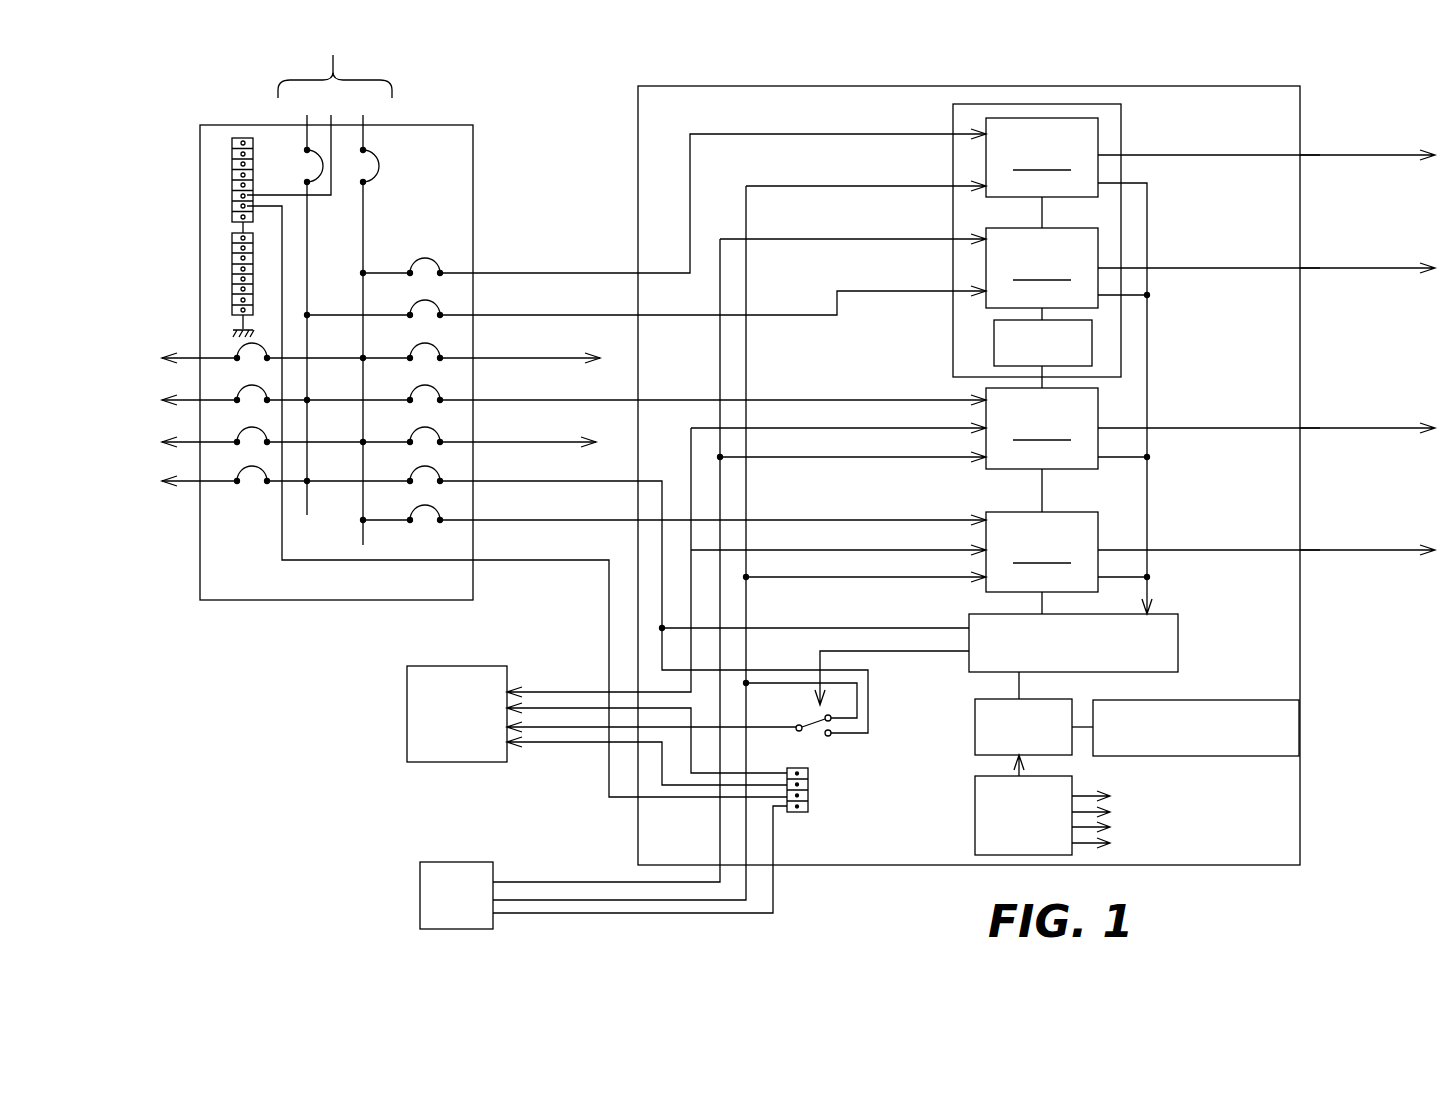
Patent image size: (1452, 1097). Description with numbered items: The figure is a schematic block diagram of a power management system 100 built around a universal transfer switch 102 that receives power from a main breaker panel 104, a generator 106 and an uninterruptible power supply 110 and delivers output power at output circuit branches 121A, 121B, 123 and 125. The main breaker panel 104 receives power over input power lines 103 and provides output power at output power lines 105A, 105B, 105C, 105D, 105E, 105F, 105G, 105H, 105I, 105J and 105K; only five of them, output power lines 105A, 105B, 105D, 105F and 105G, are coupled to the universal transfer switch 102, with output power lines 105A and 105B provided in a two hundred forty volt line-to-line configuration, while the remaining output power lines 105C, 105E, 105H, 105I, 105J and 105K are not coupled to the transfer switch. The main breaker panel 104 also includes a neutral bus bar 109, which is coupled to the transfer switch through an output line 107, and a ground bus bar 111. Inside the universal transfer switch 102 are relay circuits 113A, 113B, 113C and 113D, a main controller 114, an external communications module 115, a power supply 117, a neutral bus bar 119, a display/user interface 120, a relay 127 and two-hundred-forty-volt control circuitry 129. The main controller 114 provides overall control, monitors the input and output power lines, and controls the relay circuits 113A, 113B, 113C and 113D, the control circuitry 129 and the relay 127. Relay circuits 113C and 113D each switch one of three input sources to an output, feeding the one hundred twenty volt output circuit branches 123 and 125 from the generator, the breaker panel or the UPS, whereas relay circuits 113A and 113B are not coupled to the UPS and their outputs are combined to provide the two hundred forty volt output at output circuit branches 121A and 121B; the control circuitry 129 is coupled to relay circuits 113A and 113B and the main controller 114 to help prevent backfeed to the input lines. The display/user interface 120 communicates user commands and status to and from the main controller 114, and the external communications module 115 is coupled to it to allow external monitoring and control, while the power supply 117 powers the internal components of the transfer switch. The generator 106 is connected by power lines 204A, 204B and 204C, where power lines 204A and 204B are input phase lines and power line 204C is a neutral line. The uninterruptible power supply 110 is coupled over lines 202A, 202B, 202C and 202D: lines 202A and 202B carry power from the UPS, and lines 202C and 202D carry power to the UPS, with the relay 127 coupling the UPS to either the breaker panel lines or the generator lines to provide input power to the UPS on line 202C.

The power management system 100 is at (1347, 806).
The universal transfer switch 102 is at (1304, 88).
The input power lines 103 is at (338, 58).
The main breaker panel 104 is at (261, 604).
The output power line 105A is at (538, 273).
The output power line 105B is at (538, 315).
The output power line 105C is at (538, 358).
The output power line 105D is at (538, 400).
The output power line 105E is at (538, 442).
The output power line 105F is at (538, 481).
The output power line 105G is at (538, 520).
The output power line 105H is at (192, 353).
The output power line 105I is at (192, 396).
The output power line 105J is at (192, 438).
The output power line 105K is at (192, 477).
The generator 106 is at (420, 862).
The output line 107 is at (535, 560).
The neutral bus bar 109 is at (232, 142).
The uninterruptible power supply 110 is at (407, 667).
The ground bus bar 111 is at (232, 237).
The relay circuit 113A is at (1090, 366).
The relay circuit 113B is at (1077, 274).
The relay circuit 113C is at (1063, 450).
The relay circuit 113D is at (1063, 563).
The main controller 114 is at (1175, 614).
The external communications module 115 is at (1195, 756).
The power supply 117 is at (1072, 783).
The neutral bus bar 119 is at (808, 812).
The display/user interface 120 is at (975, 705).
The output circuit branch 121A is at (1335, 155).
The output circuit branch 121B is at (1335, 268).
The output circuit branch 123 is at (1335, 428).
The output circuit branch 125 is at (1335, 550).
The relay 127 is at (820, 735).
The 240 volt control circuitry 129 is at (994, 354).
The line 202A is at (543, 690).
The line 202B is at (594, 706).
The line 202C is at (555, 730).
The line 202D is at (583, 745).
The power line 204A is at (602, 882).
The power line 204B is at (748, 887).
The power line 204C is at (775, 906).